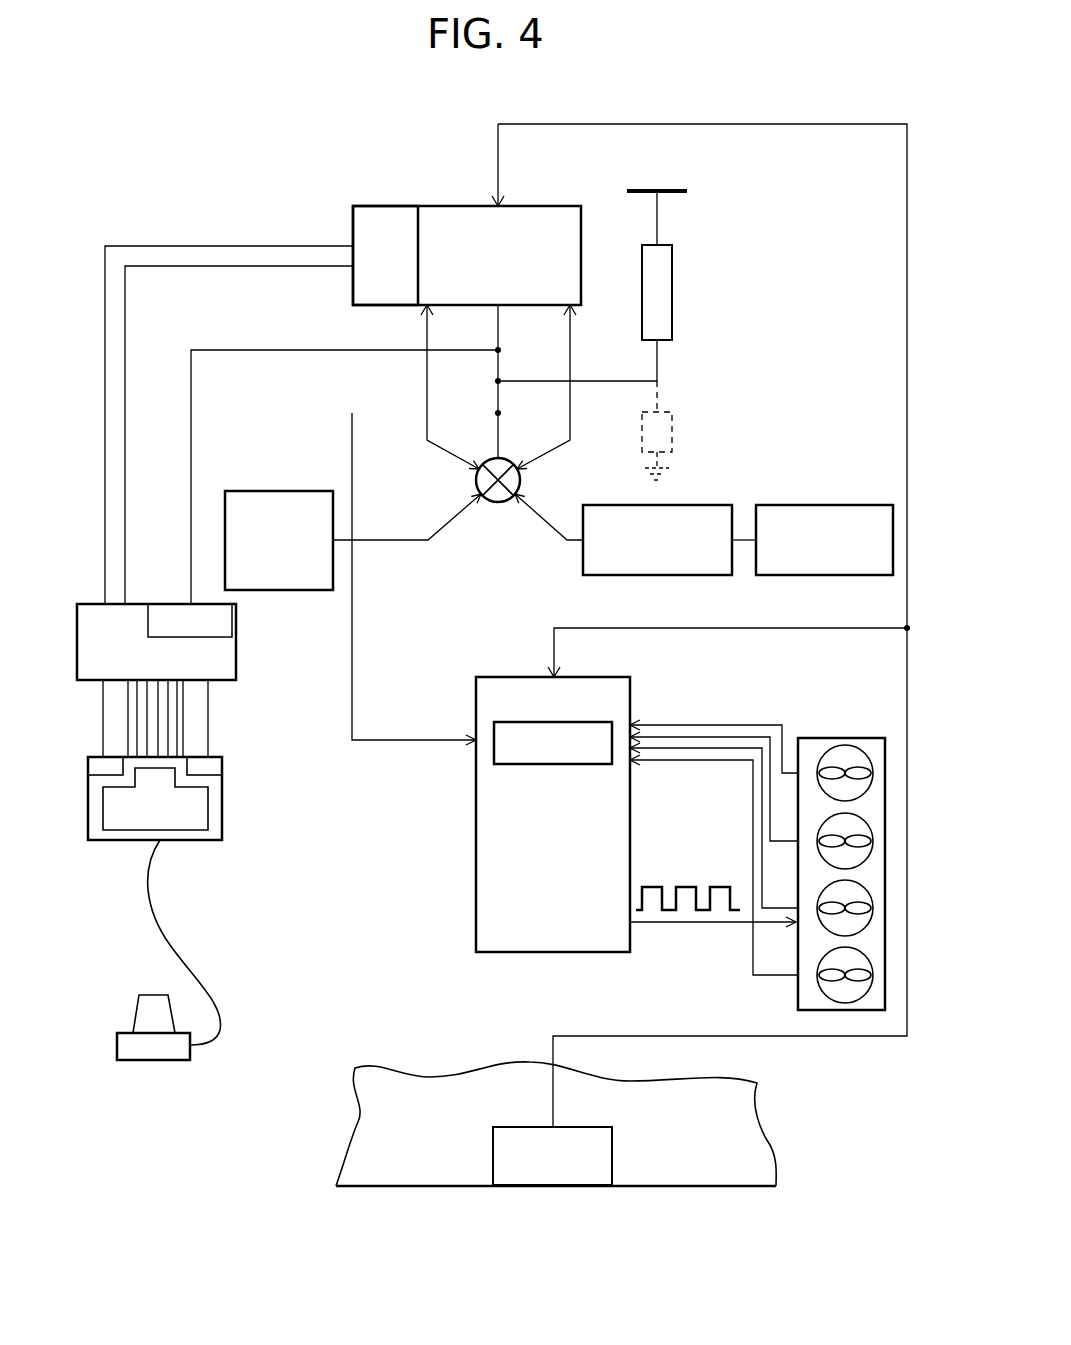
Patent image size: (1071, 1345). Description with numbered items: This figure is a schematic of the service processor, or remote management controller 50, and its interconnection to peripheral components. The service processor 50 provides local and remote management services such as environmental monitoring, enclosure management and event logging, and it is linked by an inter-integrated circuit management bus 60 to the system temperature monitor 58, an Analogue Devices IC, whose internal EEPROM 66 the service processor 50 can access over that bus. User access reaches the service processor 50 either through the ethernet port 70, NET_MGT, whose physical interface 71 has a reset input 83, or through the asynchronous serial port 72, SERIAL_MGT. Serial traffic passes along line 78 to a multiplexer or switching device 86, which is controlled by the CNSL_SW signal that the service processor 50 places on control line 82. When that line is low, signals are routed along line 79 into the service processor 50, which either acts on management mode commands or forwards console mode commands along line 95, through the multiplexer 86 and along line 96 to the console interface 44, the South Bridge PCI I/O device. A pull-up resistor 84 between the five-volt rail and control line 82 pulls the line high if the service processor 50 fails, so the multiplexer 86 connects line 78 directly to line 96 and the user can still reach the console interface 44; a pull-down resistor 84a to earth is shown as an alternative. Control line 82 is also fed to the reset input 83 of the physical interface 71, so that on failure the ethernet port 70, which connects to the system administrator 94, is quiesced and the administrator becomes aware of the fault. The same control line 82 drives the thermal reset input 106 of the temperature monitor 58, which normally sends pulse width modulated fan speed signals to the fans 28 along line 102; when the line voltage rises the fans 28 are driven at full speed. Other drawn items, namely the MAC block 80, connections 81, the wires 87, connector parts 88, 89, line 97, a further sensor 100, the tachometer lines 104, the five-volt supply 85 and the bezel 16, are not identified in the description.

The bezel 16 is at (693, 1186).
The fans 28 is at (843, 738).
The PCI I/O device (South Bridge) / console interface 44 is at (310, 491).
The service processor (remote management controller) 50 is at (457, 206).
The system temperature monitor 58 is at (476, 895).
The I2C management bus 60 is at (722, 124).
The EEPROM 66 is at (548, 764).
The ethernet port (NET_MGT) 70 is at (205, 840).
The physical interface 71 is at (236, 655).
The asynchronous serial port (SERIAL_MGT) 72 is at (830, 505).
The line 78 is at (548, 525).
The line 79 is at (570, 415).
The MAC 80 is at (386, 206).
The MAC to PHY connections 81 is at (105, 440).
The control line 82 is at (498, 325).
The reset input 83 is at (167, 604).
The pull-up resistor 84 is at (672, 292).
The pull-down resistor 84a is at (672, 430).
The 5V supply 85 is at (677, 187).
The multiplexer (switching device) 86 is at (520, 480).
The PHY to connector wires 87 is at (160, 722).
The connector contact 88 is at (100, 765).
The connector contact 89 is at (210, 765).
The system administrator 94 is at (152, 1060).
The line 95 is at (427, 380).
The line 96 is at (448, 523).
The RMC to PHY connection 97 is at (191, 428).
The LM75 temperature sensor 100 is at (493, 1146).
The line 102 is at (693, 925).
The tachometer signals 104 is at (770, 737).
The thermal reset input 106 is at (421, 740).